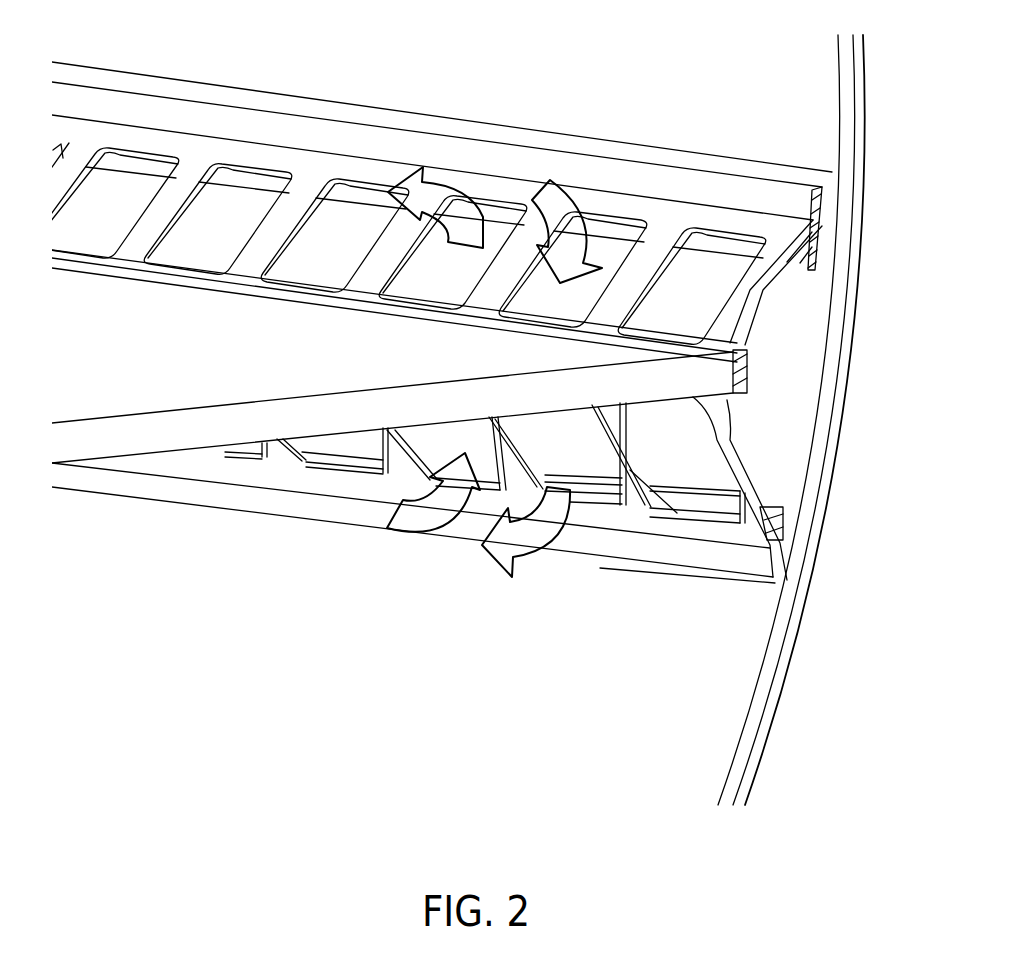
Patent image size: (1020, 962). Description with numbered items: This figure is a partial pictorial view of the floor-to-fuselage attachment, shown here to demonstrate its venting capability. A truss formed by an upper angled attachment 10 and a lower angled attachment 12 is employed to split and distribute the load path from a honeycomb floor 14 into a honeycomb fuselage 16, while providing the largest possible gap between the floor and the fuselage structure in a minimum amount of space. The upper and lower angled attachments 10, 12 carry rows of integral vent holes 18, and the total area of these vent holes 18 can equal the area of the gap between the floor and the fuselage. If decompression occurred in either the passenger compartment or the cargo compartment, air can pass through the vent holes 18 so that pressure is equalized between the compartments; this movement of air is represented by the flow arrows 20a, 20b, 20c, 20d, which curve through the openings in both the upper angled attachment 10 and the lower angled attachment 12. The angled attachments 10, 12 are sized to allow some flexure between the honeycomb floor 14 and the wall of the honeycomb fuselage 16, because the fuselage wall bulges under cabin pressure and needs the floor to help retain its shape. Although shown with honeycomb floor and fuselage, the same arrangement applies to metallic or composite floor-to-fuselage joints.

The upper angled attachment 10 is at (684, 217).
The lower angled attachment 12 is at (333, 486).
The honeycomb floor 14 is at (220, 378).
The honeycomb fuselage 16 is at (833, 461).
The vent holes 18 is at (230, 215).
The flow arrow 20a is at (460, 208).
The flow arrow 20b is at (567, 230).
The flow arrow 20c is at (427, 523).
The flow arrow 20d is at (522, 537).